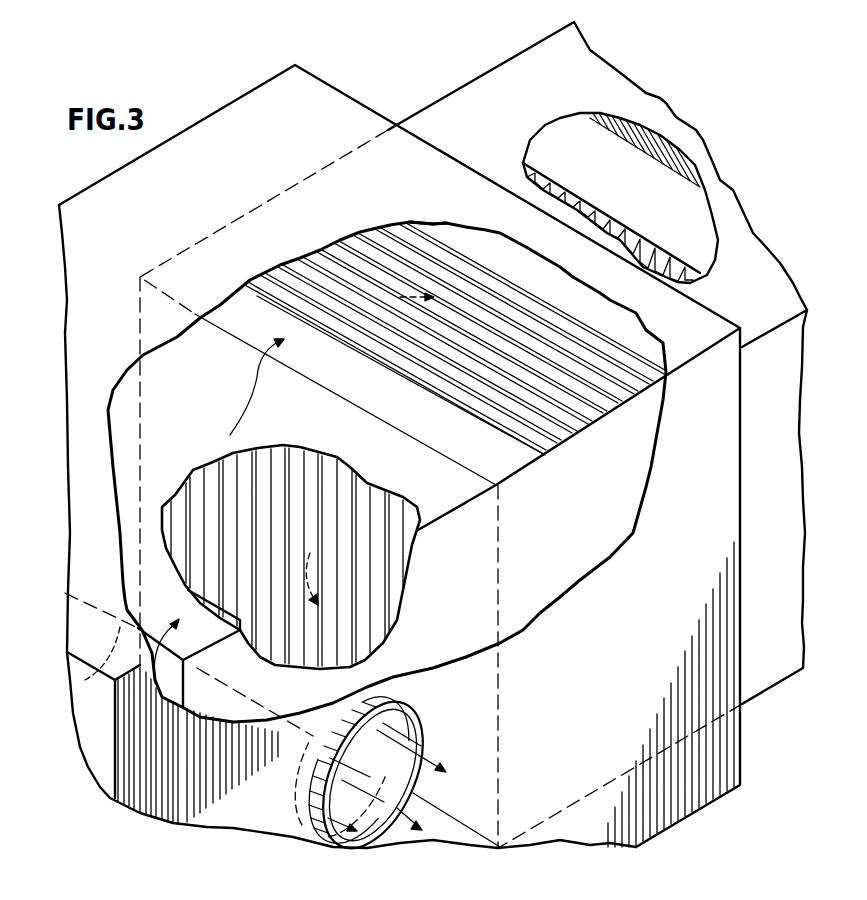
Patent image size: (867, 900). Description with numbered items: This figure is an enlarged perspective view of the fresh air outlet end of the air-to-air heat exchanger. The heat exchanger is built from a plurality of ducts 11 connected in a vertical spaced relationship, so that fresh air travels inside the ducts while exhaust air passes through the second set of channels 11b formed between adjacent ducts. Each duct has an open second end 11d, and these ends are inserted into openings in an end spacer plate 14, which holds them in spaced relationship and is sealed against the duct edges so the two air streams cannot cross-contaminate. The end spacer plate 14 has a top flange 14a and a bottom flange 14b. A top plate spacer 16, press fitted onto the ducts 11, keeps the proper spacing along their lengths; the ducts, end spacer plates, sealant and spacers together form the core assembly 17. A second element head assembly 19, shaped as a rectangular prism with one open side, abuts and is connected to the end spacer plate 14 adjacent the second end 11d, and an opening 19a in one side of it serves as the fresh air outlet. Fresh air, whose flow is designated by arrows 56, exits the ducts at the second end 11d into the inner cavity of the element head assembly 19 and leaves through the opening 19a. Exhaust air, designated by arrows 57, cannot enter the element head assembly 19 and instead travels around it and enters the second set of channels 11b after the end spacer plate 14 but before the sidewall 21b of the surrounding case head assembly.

The duct 11 is at (472, 422).
The second set of channels 11b is at (449, 227).
The open second end 11d is at (357, 583).
The end spacer plate 14 is at (484, 590).
The top flange 14a is at (514, 468).
The bottom flange 14b is at (545, 821).
The top plate spacer 16 is at (550, 182).
The core assembly 17 is at (602, 418).
The second element head assembly 19 is at (466, 507).
The opening 19a is at (297, 765).
The sidewall 21b is at (486, 197).
The arrows designating flow of fresh air 56 is at (231, 557).
The arrows designating flow of exhaust air 57 is at (388, 285).